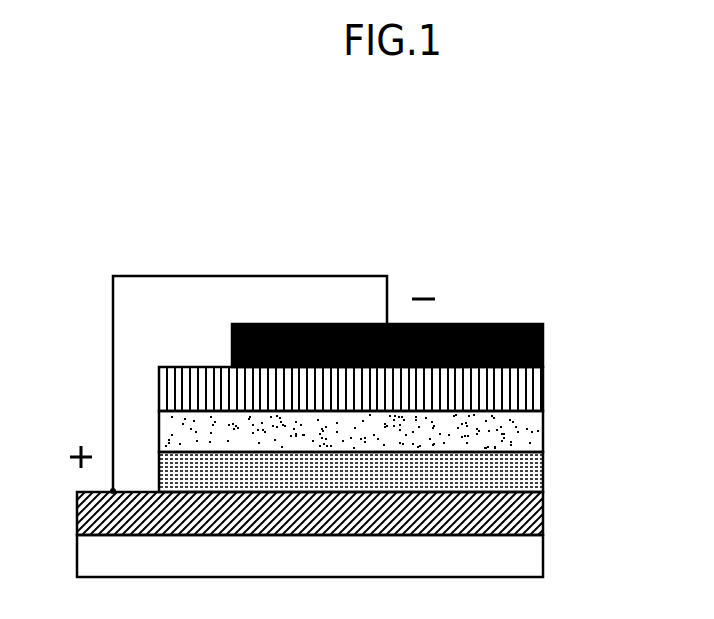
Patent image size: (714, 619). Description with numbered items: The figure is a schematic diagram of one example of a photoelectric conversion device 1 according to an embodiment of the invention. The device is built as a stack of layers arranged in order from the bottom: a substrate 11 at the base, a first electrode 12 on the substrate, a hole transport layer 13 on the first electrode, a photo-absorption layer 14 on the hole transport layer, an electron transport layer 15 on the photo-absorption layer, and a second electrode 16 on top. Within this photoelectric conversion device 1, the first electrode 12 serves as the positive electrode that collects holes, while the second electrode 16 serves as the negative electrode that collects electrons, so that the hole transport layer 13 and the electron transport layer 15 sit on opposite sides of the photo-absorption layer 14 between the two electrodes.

The photoelectric conversion device 1 is at (230, 232).
The substrate 11 is at (543, 559).
The first electrode 12 is at (543, 516).
The hole transport layer 13 is at (543, 475).
The photo-absorption layer 14 is at (543, 434).
The electron transport layer 15 is at (543, 392).
The second electrode 16 is at (543, 348).